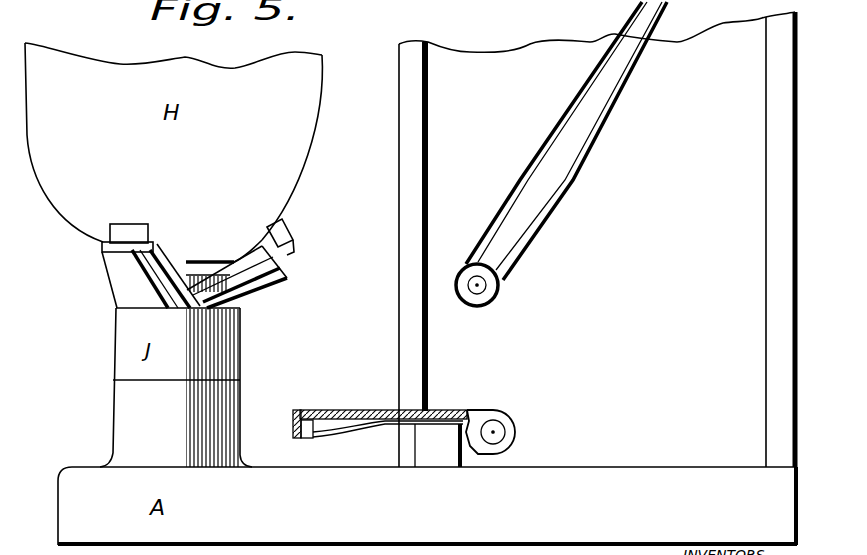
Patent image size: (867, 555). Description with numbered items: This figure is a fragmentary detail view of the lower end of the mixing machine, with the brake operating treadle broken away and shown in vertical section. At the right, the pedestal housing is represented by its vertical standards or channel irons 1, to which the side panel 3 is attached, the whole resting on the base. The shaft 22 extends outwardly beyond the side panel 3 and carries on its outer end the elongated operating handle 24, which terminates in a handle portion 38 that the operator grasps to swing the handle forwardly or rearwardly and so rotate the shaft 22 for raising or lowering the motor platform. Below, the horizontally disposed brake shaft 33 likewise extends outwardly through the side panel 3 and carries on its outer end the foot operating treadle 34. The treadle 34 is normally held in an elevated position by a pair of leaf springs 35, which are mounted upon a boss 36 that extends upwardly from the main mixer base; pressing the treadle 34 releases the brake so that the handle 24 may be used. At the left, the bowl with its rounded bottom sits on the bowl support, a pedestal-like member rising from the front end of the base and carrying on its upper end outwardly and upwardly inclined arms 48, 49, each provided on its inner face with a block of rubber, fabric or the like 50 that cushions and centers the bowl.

The vertical standards or channel irons 1 is at (408, 350).
The side panel 3 is at (497, 77).
The shaft 22 is at (480, 287).
The elongated operating handle 24 is at (582, 130).
The horizontally disposed shaft 33 is at (497, 430).
The foot operating treadle 34 is at (355, 398).
The leaf springs 35 is at (360, 437).
The boss 36 is at (438, 458).
The handle portion 38 is at (713, 8).
The arm 48 is at (118, 268).
The arm 49 is at (270, 276).
The block of rubber, fabric or the like 50 is at (137, 213).